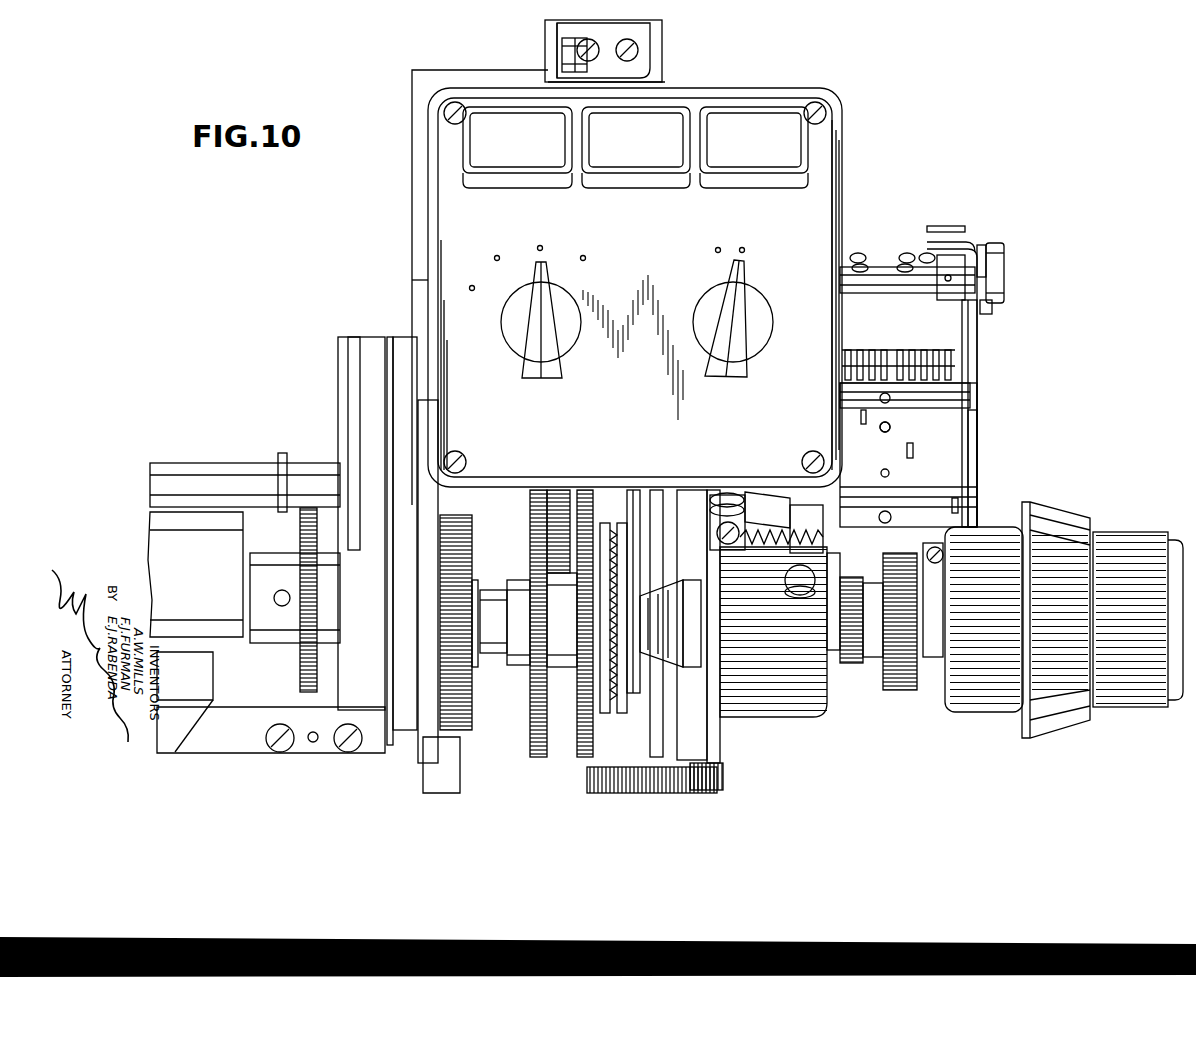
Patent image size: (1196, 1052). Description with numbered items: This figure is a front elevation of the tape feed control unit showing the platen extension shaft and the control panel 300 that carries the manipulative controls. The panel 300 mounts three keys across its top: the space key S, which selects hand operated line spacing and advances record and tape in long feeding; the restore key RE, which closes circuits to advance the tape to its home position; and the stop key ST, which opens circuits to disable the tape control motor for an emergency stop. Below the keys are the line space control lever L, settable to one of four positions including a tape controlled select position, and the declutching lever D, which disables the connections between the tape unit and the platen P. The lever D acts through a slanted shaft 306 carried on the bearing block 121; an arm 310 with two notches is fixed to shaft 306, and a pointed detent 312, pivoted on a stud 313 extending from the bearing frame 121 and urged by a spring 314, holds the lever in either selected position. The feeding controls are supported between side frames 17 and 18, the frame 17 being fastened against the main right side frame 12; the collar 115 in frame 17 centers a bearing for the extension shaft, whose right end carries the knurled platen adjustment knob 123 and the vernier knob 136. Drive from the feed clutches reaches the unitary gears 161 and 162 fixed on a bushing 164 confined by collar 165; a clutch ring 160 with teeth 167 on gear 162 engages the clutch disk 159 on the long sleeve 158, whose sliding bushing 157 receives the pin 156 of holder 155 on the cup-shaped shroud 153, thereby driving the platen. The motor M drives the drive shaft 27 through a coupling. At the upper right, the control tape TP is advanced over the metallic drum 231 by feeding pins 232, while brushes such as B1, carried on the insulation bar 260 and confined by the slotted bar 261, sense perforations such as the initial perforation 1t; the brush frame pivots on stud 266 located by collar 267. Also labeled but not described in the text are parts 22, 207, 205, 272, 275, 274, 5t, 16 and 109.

The mounting bracket 22 is at (420, 85).
The bracket 207 is at (546, 31).
The switch 205 is at (562, 51).
The control panel 300 is at (816, 200).
The space key S is at (493, 118).
The restore key RE is at (665, 107).
The stop key ST is at (763, 108).
The line space control lever L is at (540, 355).
The declutching lever D is at (735, 375).
The shaft 272 is at (880, 275).
The bar 275 is at (945, 230).
The bracket arm 274 is at (956, 250).
The fixed collar 267 is at (998, 245).
The stud 266 is at (1004, 278).
The insulation bar 260 is at (950, 330).
The slotted insulation bar 261 is at (965, 362).
The brush B1 is at (970, 378).
The control tape TP is at (965, 473).
The metallic drum 231 is at (972, 430).
The feeding pins 232 is at (890, 427).
The slot 5t is at (920, 450).
The initial tape perforation 1t is at (965, 503).
The platen P is at (165, 563).
The gear 16 is at (305, 688).
The main right side frame 12 is at (377, 495).
The side frame 17 is at (445, 733).
The annular collar 115 is at (460, 720).
The fixed collar 165 is at (495, 643).
The bushing 164 is at (520, 650).
The gear 161 is at (530, 718).
The gear 109 is at (556, 523).
The clutch ring 160 is at (597, 690).
The clutch teeth 167 is at (602, 533).
The clutch disk 159 is at (620, 710).
The drive shaft 27 is at (642, 591).
The sleeve 158 is at (670, 612).
The gear 162 is at (580, 747).
The motor M is at (595, 782).
The side frame 18 is at (700, 750).
The bearing cup 121 is at (760, 715).
The sliding bushing 157 is at (880, 680).
The driving pin 156 is at (915, 588).
The driving pin holder 155 is at (935, 650).
The cup-shaped shroud 153 is at (960, 715).
The vernier knob 136 is at (1050, 722).
The platen adjustment knob 123 is at (1130, 688).
The slanted shaft 306 is at (725, 490).
The notched arm 310 is at (765, 500).
The pointed detent 312 is at (790, 530).
The spring 314 is at (735, 543).
The stud 313 is at (785, 580).